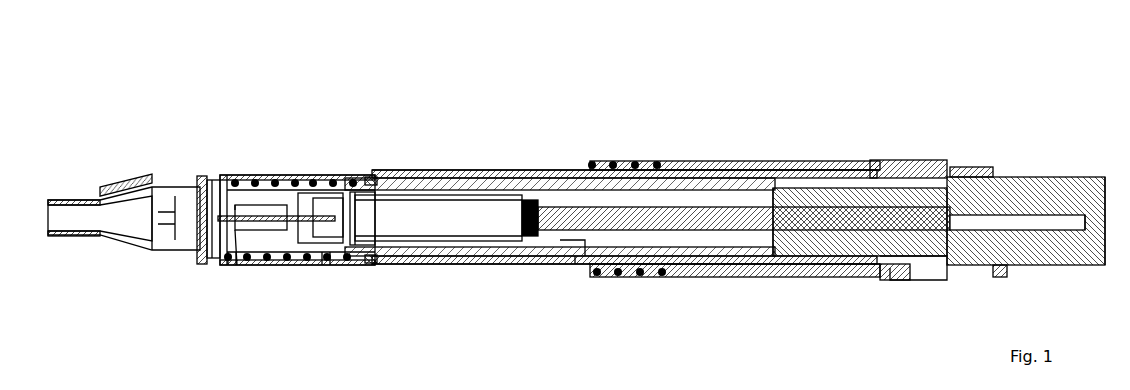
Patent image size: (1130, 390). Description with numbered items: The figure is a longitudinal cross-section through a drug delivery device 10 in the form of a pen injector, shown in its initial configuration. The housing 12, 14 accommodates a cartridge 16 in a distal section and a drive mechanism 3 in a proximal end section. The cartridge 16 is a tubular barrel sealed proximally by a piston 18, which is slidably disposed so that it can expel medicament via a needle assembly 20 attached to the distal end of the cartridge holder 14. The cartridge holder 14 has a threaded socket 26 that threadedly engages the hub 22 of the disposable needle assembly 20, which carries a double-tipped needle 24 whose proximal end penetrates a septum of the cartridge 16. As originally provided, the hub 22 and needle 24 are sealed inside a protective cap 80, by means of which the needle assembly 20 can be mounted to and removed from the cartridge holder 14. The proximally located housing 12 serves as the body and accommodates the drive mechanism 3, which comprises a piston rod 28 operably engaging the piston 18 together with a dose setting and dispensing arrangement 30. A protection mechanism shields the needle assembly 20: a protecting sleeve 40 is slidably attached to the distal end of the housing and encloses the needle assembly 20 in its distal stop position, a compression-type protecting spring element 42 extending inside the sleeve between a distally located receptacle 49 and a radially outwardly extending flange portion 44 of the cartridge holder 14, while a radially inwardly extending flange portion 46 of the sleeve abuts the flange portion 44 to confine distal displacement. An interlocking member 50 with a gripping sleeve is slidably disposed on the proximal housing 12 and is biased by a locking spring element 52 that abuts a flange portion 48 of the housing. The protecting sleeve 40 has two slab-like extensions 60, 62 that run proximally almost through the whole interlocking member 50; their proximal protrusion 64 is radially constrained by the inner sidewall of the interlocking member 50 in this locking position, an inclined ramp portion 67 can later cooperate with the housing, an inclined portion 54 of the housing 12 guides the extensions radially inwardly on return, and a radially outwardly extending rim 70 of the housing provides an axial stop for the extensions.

The drug delivery device 10 is at (72, 103).
The housing 12 is at (927, 263).
The cartridge holder 14 is at (450, 188).
The cartridge 16 is at (488, 240).
The piston 18 is at (535, 240).
The needle assembly 20 is at (247, 203).
The hub 22 is at (310, 268).
The double-tipped needle 24 is at (232, 266).
The threaded socket 26 is at (333, 180).
The piston rod 28 is at (862, 232).
The dose setting and/or dose dispensing arrangement 30 is at (1063, 258).
The protecting sleeve 40 is at (312, 183).
The protecting spring element 42 is at (267, 180).
The flange portion 44 is at (365, 268).
The radially inwardly extending flange portion 46 is at (370, 182).
The flange portion 48 is at (578, 268).
The receptacle 49 is at (196, 176).
The interlocking member 50 is at (690, 160).
The locking spring element 52 is at (612, 163).
The inclined portion 54 is at (895, 270).
The slab-like extension 60 is at (525, 170).
The slab-like extension 62 is at (450, 268).
The protrusion 64 is at (878, 172).
The inclined ramp portion 67 is at (887, 178).
The rim 70 is at (1012, 265).
The protective cap 80 is at (128, 193).
The drive mechanism 3 is at (763, 192).